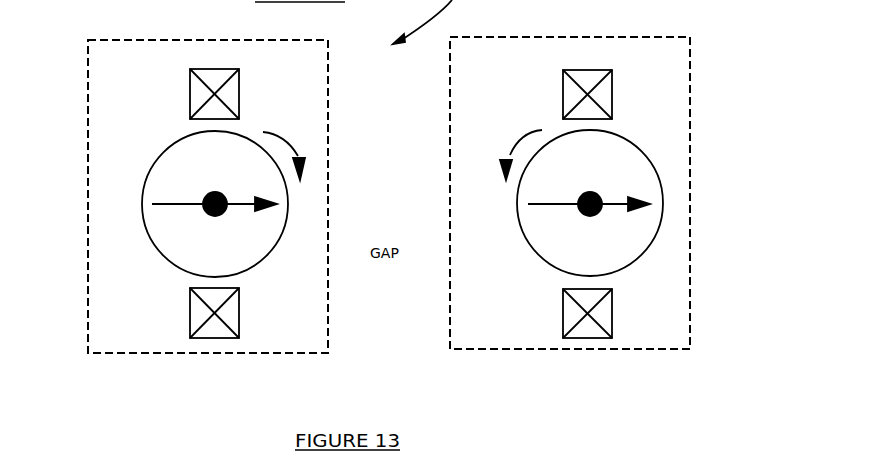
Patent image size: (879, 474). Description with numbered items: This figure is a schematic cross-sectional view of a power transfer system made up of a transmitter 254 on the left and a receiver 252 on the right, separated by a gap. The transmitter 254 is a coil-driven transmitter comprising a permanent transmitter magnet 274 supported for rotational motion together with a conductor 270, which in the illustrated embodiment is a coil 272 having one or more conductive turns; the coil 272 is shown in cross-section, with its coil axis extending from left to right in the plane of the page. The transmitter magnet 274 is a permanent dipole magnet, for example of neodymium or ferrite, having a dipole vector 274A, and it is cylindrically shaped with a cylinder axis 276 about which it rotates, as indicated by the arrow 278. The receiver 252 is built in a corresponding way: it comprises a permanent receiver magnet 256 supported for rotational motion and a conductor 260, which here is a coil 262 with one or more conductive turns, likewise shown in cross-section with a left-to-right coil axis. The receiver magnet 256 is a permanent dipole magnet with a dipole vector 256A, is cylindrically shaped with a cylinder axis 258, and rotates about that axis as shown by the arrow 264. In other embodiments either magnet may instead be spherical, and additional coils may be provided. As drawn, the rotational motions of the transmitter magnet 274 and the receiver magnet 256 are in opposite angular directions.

The receiver 252 is at (523, 335).
The transmitter 254 is at (140, 338).
The receiver magnet 256 is at (558, 244).
The dipole vector 256A is at (617, 200).
The cylinder axis 258 is at (598, 210).
The conductor 260 is at (608, 95).
The coil 262 is at (602, 317).
The arrow 264 is at (508, 160).
The conductor 270 is at (197, 95).
The coil 272 is at (232, 313).
The transmitter magnet 274 is at (168, 163).
The dipole vector 274A is at (163, 205).
The cylinder axis 276 is at (212, 211).
The arrow 278 is at (293, 138).